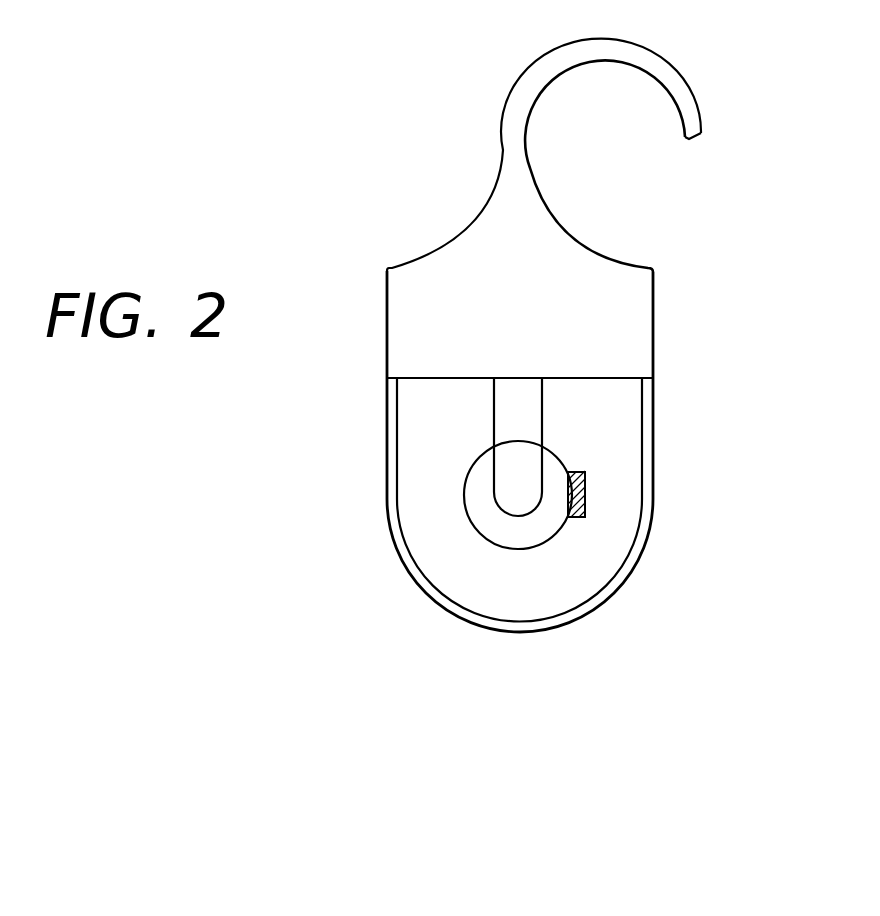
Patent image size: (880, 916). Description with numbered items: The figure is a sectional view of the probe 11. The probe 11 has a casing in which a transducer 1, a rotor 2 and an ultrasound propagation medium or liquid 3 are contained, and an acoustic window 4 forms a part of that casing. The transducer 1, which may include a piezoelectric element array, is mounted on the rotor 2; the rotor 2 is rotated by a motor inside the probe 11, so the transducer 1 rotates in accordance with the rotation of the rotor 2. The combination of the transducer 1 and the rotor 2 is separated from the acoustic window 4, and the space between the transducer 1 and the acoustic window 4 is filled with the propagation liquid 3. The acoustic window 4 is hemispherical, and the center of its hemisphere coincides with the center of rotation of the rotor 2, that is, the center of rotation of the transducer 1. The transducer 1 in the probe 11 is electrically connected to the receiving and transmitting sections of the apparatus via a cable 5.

The transducer 1 is at (585, 487).
The rotor 2 is at (462, 472).
The ultrasound propagation medium or liquid 3 is at (602, 552).
The acoustic window 4 is at (603, 602).
The cable 5 is at (698, 105).
The probe 11 is at (583, 342).